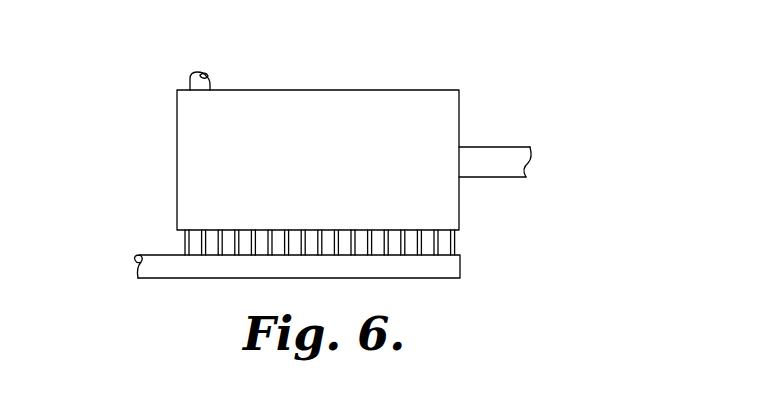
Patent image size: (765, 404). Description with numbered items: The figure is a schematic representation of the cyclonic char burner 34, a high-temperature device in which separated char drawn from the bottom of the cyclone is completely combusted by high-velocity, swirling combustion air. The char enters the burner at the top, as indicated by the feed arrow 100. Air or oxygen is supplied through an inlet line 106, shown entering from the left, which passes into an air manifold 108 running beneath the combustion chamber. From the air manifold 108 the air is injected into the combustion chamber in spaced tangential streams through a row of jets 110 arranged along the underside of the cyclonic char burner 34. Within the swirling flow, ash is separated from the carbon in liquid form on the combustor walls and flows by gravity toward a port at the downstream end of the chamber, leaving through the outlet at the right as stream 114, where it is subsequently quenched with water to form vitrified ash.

The cyclonic char burner 34 is at (357, 108).
The fluid inlet flow 100 is at (192, 52).
The inlet line 106 is at (118, 264).
The air manifold 108 is at (213, 273).
The jets 110 is at (458, 241).
The stream 114 is at (584, 160).